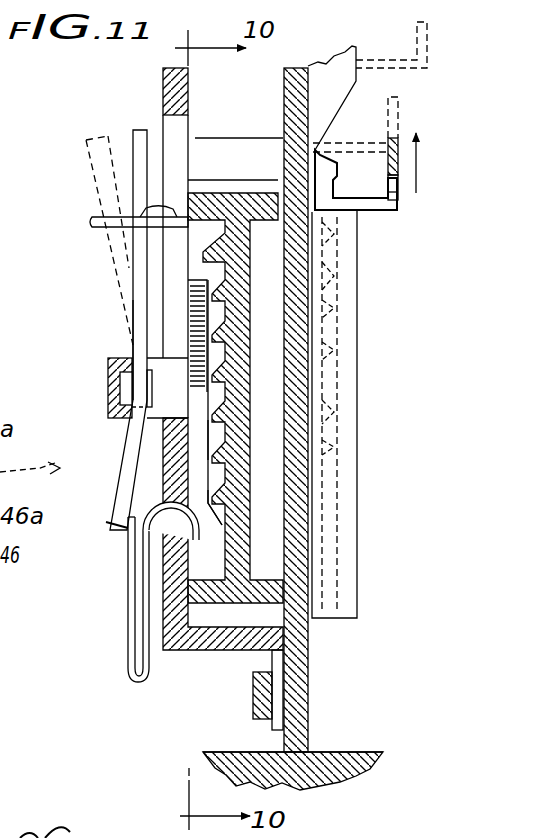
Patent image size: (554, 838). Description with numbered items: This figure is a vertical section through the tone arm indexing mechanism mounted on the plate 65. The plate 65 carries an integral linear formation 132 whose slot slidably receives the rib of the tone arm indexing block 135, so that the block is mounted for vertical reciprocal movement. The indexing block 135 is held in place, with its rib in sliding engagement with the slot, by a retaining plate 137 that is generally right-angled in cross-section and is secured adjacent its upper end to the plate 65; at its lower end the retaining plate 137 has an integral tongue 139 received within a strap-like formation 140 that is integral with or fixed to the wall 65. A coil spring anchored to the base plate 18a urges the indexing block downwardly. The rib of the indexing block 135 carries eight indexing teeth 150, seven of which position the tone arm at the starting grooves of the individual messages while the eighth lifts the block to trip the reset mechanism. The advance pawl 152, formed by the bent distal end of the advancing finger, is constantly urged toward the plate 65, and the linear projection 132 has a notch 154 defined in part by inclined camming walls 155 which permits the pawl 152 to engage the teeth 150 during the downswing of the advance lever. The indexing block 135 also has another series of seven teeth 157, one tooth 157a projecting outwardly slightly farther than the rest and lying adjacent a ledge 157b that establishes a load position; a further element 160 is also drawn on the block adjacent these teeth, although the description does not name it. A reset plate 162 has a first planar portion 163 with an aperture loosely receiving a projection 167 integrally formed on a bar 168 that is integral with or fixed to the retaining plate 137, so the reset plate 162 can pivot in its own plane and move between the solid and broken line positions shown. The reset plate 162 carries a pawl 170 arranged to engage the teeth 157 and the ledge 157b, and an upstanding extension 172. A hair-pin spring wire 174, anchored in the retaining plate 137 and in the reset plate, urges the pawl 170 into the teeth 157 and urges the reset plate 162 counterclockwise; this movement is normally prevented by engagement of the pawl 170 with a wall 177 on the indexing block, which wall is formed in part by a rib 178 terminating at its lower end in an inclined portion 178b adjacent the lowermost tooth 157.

The base plate 18a is at (350, 752).
The plate 65 is at (298, 66).
The linear formation 132 is at (358, 468).
The tone arm indexing block 135 is at (237, 190).
The retaining plate 137 is at (165, 618).
The tongue 139 is at (276, 662).
The strap-like formation 140 is at (254, 693).
The indexing teeth 150 is at (338, 312).
The advance pawl 152 is at (370, 212).
The notch 154 is at (360, 127).
The inclined camming walls 155 is at (347, 99).
The teeth 157 is at (205, 312).
The tooth 157a is at (203, 270).
The ledge 157b is at (203, 258).
The strip 160 is at (200, 294).
The reset plate 162 is at (128, 341).
The first planar portion 163 is at (171, 534).
The projection 167 is at (152, 388).
The bar 168 is at (108, 378).
The pawl 170 is at (160, 209).
The upstanding extension 172 is at (133, 133).
The spring wire 174 is at (133, 657).
The wall 177 is at (206, 437).
The rib 178 is at (200, 345).
The inclined portion 178b is at (222, 526).